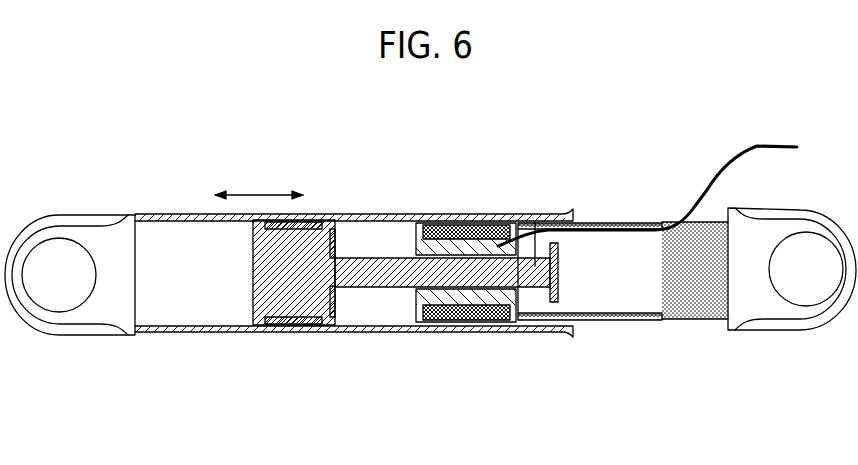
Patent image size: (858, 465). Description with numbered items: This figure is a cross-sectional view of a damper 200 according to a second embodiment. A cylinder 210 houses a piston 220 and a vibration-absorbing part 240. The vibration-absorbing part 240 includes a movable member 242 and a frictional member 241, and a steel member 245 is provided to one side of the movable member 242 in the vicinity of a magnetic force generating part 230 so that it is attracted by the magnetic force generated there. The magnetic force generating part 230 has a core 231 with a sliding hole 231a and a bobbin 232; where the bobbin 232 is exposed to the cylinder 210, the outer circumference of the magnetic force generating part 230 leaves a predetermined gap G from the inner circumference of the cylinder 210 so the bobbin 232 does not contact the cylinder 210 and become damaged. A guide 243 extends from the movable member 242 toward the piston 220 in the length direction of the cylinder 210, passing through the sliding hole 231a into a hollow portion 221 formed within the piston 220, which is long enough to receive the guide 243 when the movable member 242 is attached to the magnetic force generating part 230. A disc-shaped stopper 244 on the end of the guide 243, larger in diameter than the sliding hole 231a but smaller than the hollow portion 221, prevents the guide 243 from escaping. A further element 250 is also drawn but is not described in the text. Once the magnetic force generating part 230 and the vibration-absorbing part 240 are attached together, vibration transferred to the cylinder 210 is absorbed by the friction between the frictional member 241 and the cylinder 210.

The shock absorber 200 is at (745, 113).
The cylinder 210 is at (162, 214).
The piston 220 is at (690, 306).
The hollow portion 221 is at (628, 314).
The magnetic force generating part 230 is at (492, 138).
The core 231 is at (432, 226).
The sliding hole 231a is at (470, 290).
The bobbin 232 is at (482, 224).
The vibration-absorbing part 240 is at (327, 395).
The frictional member 241 is at (318, 324).
The movable member 242 is at (253, 300).
The guide 243 is at (380, 287).
The stopper 244 is at (566, 300).
The steel member 245 is at (337, 240).
The lead wire 250 is at (700, 180).
The gap G is at (535, 214).